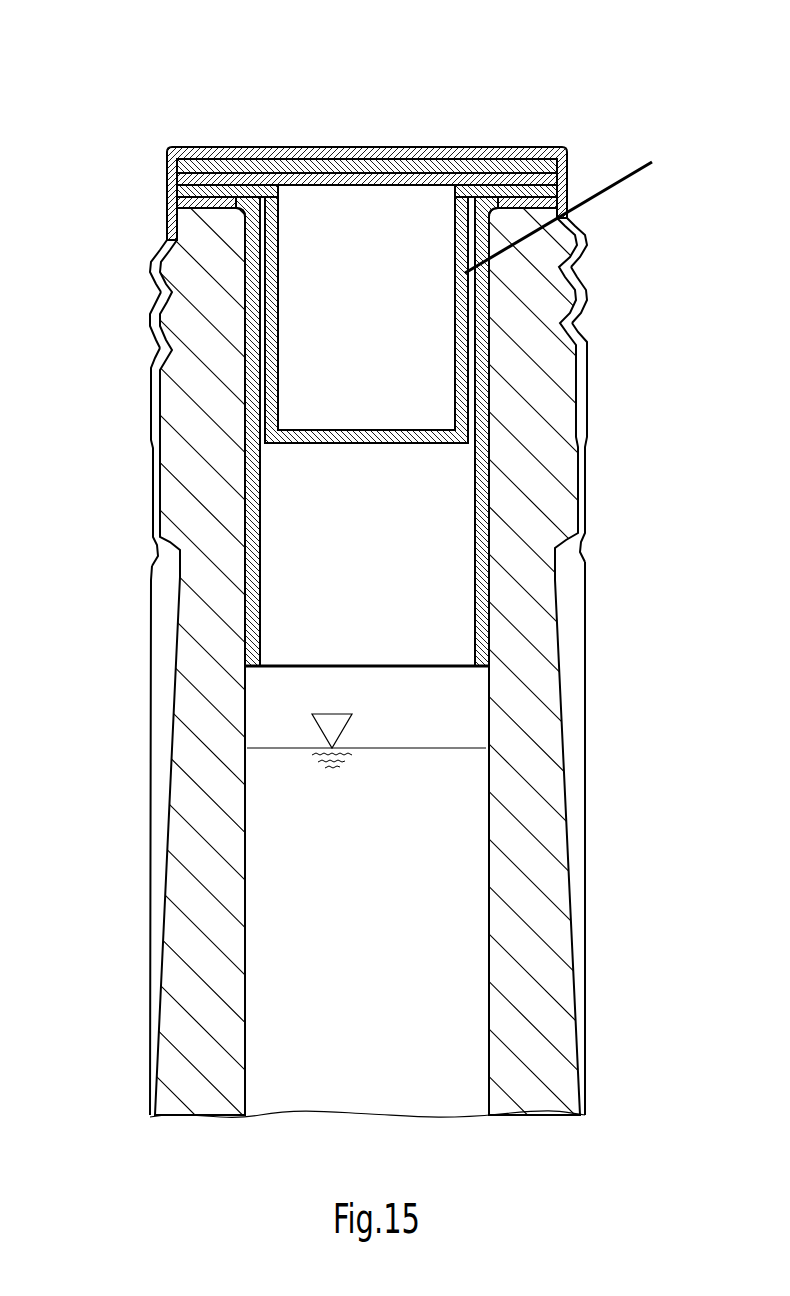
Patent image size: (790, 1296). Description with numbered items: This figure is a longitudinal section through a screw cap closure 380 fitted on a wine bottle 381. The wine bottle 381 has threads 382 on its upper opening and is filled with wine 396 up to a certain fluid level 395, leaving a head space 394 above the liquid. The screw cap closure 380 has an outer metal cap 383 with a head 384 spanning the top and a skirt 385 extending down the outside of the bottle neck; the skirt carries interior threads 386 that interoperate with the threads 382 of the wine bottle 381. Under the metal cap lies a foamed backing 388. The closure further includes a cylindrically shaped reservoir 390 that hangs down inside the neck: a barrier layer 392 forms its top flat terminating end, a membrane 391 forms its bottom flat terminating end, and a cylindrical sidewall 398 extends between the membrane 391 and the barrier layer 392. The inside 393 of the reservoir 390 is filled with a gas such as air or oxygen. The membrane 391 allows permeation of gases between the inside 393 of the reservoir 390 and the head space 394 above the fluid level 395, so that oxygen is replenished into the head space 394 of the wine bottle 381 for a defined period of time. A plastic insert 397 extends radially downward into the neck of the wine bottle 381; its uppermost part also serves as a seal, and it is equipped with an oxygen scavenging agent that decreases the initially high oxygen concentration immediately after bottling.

The screw cap closure 380 is at (430, 117).
The wine bottle 381 is at (557, 358).
The threads 382 is at (572, 323).
The outer metal cap 383 is at (520, 158).
The head 384 is at (583, 408).
The skirt 385 is at (588, 800).
The interior threads 386 is at (570, 265).
The foamed backing 388 is at (212, 162).
The cylindrically shaped reservoir 390 is at (247, 320).
The membrane 391 is at (302, 450).
The barrier layer 392 is at (177, 173).
The inside of reservoir 393 is at (307, 367).
The head space 394 is at (305, 598).
The fluid level 395 is at (280, 750).
The wine 396 is at (305, 925).
The plastic insert 397 is at (185, 202).
The cylindrical sidewall 398 is at (582, 205).